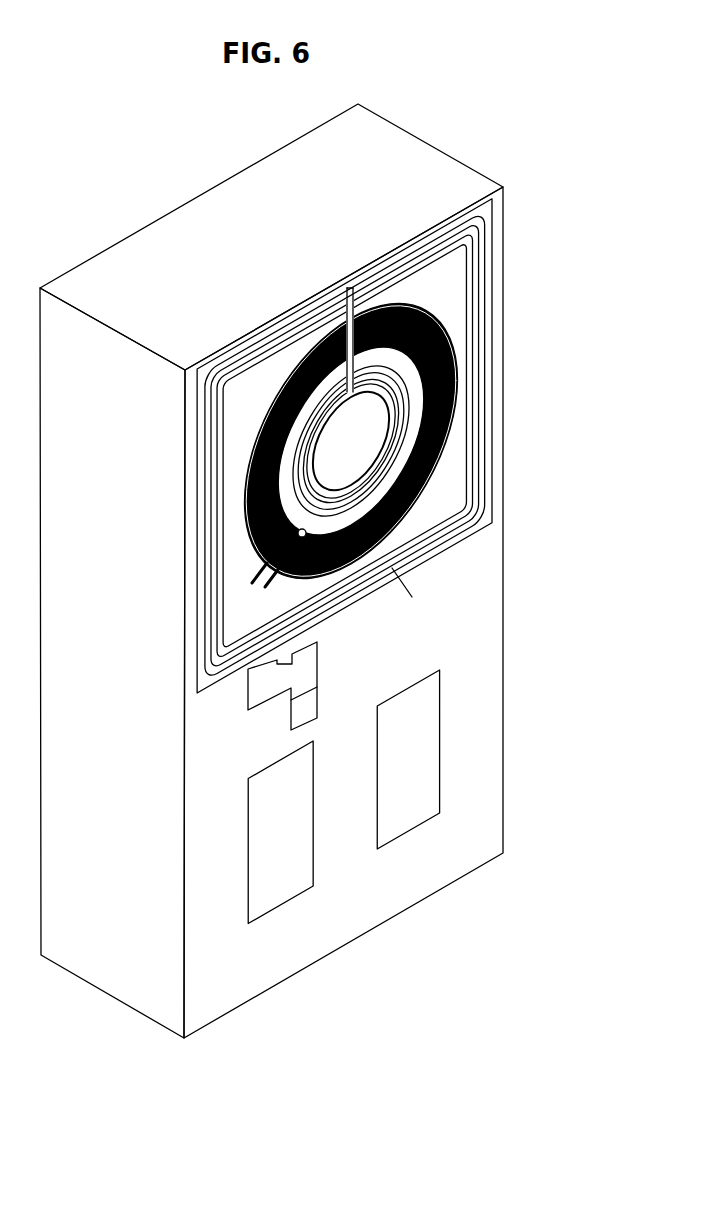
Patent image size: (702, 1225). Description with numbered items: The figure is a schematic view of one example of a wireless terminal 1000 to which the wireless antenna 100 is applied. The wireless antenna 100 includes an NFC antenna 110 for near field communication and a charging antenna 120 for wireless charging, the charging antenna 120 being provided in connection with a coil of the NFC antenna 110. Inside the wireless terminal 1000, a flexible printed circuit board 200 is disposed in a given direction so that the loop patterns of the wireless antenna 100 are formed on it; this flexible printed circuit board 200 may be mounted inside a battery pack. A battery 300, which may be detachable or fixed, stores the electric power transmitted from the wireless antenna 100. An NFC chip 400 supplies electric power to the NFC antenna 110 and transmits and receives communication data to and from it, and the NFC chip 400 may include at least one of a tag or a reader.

The wireless terminal 1000 is at (128, 140).
The wireless antenna 100 is at (345, 446).
The NFC antenna 110 is at (369, 486).
The charging antenna 120 is at (315, 343).
The flexible printed circuit board 200 is at (344, 446).
The battery 300 is at (280, 832).
The NFC chip 400 is at (408, 759).